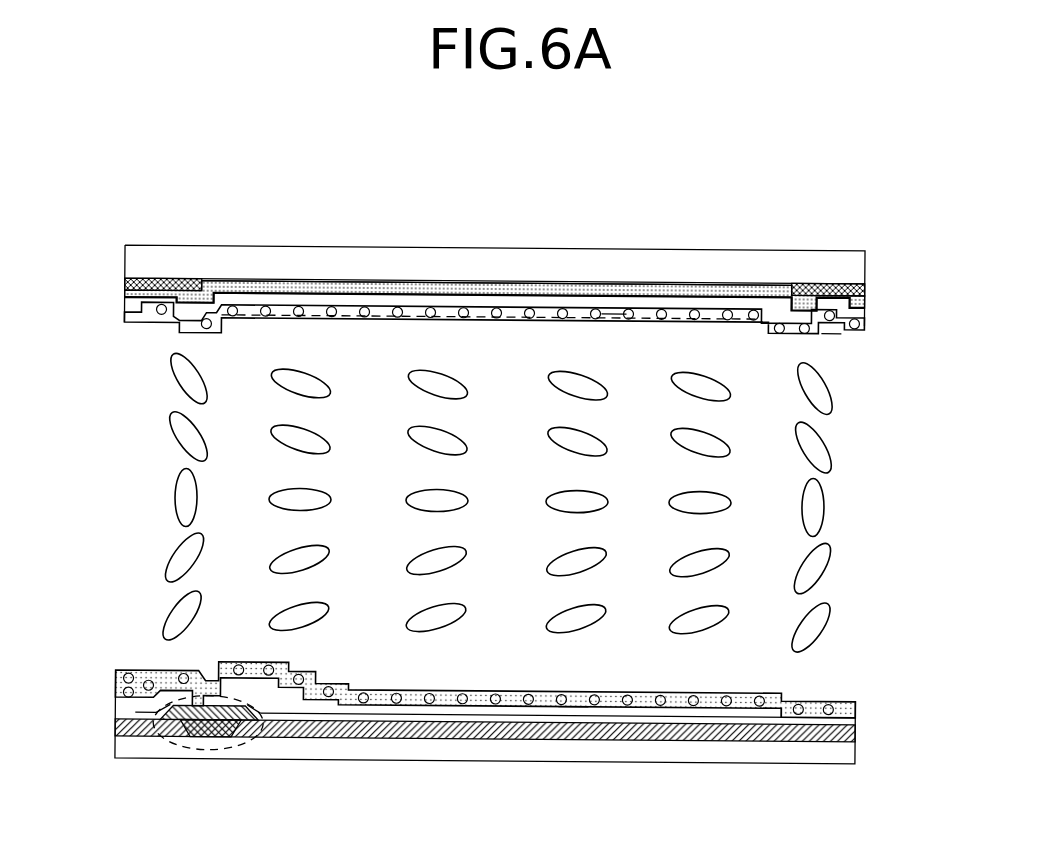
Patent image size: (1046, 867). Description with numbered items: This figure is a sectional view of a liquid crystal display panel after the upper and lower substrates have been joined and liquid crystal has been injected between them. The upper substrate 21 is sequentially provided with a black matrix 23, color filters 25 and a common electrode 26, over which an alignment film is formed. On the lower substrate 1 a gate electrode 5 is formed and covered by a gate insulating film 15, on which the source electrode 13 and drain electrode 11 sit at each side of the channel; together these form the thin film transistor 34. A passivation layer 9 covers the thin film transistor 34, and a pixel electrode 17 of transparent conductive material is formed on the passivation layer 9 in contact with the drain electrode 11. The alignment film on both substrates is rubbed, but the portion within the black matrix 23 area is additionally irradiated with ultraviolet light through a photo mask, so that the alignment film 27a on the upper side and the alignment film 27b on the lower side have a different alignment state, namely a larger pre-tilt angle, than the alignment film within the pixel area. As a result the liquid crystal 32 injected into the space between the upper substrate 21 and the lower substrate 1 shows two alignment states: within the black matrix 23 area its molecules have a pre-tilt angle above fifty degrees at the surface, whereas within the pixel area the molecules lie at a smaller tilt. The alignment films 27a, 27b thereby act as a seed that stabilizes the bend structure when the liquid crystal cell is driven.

The lower substrate 1 is at (823, 759).
The gate electrode 5 is at (205, 742).
The passivation layer 9 is at (858, 718).
The drain electrode 11 is at (263, 745).
The source electrode 13 is at (150, 717).
The gate insulating film 15 is at (858, 736).
The pixel electrode 17 is at (784, 698).
The upper substrate 21 is at (840, 252).
The black matrix 23 is at (866, 289).
The color filters 25 is at (866, 298).
The common electrode 26 is at (864, 318).
The alignment film within black matrix area 27a is at (831, 333).
The alignment film of lower substrate 27b is at (818, 700).
The liquid crystal 32 is at (820, 500).
The thin film transistor 34 is at (172, 742).